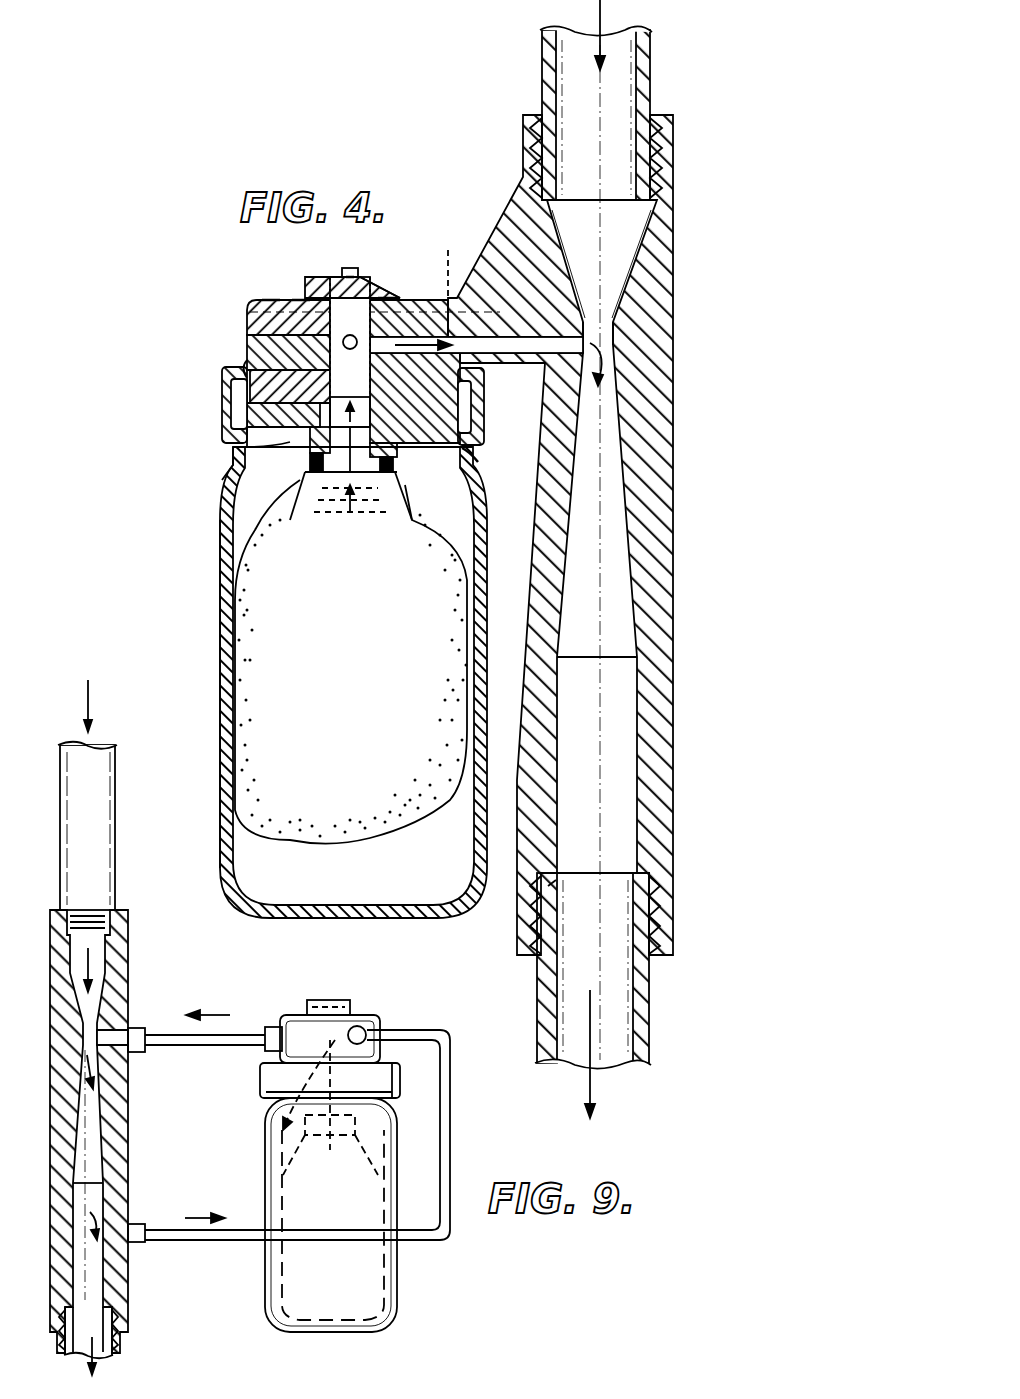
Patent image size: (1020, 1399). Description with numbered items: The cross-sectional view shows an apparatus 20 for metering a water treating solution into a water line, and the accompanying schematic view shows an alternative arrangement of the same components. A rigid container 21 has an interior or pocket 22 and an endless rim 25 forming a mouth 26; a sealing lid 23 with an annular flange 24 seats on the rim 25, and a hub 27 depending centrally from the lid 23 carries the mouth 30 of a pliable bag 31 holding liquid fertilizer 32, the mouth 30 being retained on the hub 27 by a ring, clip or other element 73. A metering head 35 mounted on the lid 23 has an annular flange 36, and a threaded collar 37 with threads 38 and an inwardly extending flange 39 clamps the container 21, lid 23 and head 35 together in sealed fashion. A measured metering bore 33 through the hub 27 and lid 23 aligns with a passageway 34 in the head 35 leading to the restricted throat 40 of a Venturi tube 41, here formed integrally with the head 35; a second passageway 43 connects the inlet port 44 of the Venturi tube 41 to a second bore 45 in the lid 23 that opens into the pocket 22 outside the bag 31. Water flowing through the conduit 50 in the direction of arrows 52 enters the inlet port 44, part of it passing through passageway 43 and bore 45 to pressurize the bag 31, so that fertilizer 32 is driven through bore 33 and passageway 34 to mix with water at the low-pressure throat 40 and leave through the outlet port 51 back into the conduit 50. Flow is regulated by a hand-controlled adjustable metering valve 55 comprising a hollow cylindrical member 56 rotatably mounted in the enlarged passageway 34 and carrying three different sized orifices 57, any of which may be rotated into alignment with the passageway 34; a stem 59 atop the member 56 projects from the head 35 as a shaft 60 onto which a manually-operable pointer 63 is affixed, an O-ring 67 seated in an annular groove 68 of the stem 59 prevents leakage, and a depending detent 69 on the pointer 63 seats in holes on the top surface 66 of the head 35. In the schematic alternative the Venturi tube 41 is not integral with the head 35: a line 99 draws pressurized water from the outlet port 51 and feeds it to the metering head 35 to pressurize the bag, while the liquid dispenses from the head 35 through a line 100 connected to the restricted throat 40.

In FIG. 4, the apparatus 20 is at (193, 300).
In FIG. 4, the rigid container 21 is at (220, 585).
In FIG. 9, the rigid container 21 is at (265, 1163).
In FIG. 4, the interior or pocket 22 is at (220, 515).
In FIG. 4, the sealing lid 23 is at (232, 452).
In FIG. 4, the annular flange 24 is at (250, 410).
In FIG. 4, the endless rim 25 is at (484, 394).
In FIG. 4, the mouth 26 is at (462, 462).
In FIG. 4, the hub 27 is at (403, 487).
In FIG. 4, the mouth 30 is at (318, 505).
In FIG. 4, the bag 31 is at (362, 727).
In FIG. 9, the bag 31 is at (392, 1165).
In FIG. 4, the liquid fertilizer or water treating solution 32 is at (363, 510).
In FIG. 4, the measured metering bore 33 is at (308, 487).
In FIG. 4, the passageway 34 is at (478, 298).
In FIG. 4, the metering head 35 is at (273, 285).
In FIG. 9, the metering head 35 is at (287, 1003).
In FIG. 4, the annular flange 36 is at (222, 378).
In FIG. 4, the threaded collar 37 is at (222, 402).
In FIG. 9, the threaded collar 37 is at (260, 1074).
In FIG. 4, the lower flange 38 is at (247, 425).
In FIG. 4, the inwardly extending flange 39 is at (247, 368).
In FIG. 4, the restricted throat 40 is at (608, 333).
In FIG. 9, the restricted throat 40 is at (96, 1015).
In FIG. 4, the Venturi tube 41 is at (686, 543).
In FIG. 9, the Venturi tube 41 is at (140, 1133).
In FIG. 4, the second passageway 43 is at (255, 365).
In FIG. 4, the inlet port 44 is at (557, 212).
In FIG. 4, the second bore 45 is at (268, 450).
In FIG. 4, the water flow conduit 50 is at (543, 74).
In FIG. 9, the water flow conduit 50 is at (60, 857).
In FIG. 4, the outlet port 51 is at (548, 886).
In FIG. 4, the arrows 52 is at (598, 8).
In FIG. 4, the hand-controlled adjustable metering valve 55 is at (387, 276).
In FIG. 9, the hand-controlled adjustable metering valve 55 is at (366, 997).
In FIG. 4, the hollow cylindrical plug or member 56 is at (350, 418).
In FIG. 4, the orifices 57 is at (349, 350).
In FIG. 4, the stem 59 is at (350, 276).
In FIG. 4, the short extension or shaft 60 is at (355, 268).
In FIG. 4, the manually-operable pointer 63 is at (392, 283).
In FIG. 9, the manually-operable pointer 63 is at (347, 1000).
In FIG. 4, the top surface 66 is at (270, 284).
In FIG. 4, the O-ring 67 is at (362, 277).
In FIG. 4, the annular groove 68 is at (300, 285).
In FIG. 4, the depending detent 69 is at (400, 294).
In FIG. 4, the ring, clip or other element 73 is at (391, 458).
In FIG. 9, the line 99 is at (450, 1160).
In FIG. 9, the line 100 is at (233, 1030).